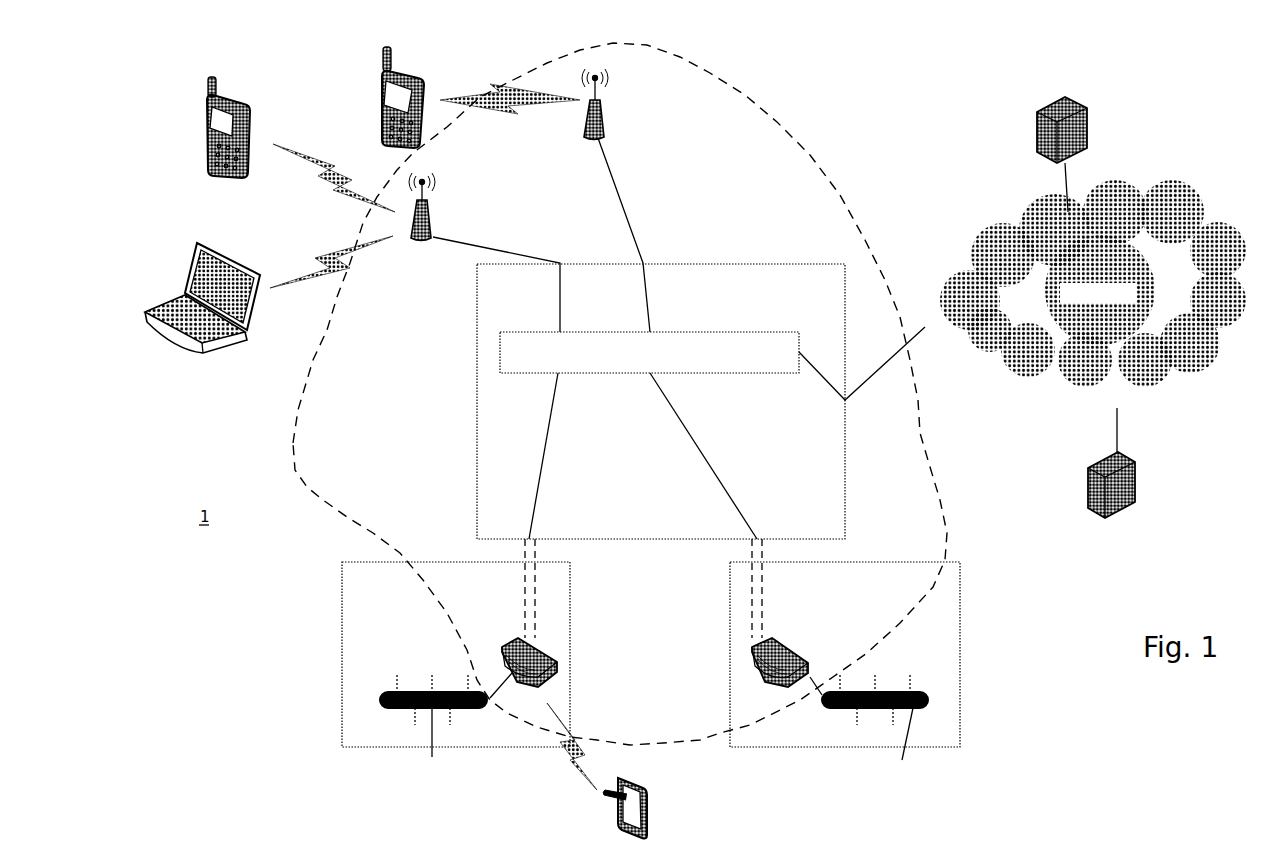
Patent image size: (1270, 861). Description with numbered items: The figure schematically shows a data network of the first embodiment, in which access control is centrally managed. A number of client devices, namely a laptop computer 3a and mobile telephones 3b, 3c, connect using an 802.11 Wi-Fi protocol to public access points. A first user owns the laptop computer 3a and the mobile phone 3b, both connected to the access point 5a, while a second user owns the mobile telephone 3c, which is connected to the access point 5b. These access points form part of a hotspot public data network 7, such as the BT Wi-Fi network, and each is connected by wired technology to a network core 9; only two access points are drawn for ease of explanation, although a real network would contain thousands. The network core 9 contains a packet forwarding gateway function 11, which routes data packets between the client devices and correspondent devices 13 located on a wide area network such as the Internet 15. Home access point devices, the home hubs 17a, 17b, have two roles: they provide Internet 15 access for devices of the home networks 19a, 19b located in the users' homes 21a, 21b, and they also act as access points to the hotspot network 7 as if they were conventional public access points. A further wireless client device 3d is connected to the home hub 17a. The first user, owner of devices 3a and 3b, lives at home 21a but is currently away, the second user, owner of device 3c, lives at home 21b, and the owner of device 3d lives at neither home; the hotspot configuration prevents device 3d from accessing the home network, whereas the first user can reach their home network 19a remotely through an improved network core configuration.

The laptop computer 3a is at (192, 250).
The mobile phone 3b is at (233, 96).
The mobile telephone 3c is at (411, 69).
The wireless client device 3d is at (648, 800).
The access point 5a is at (430, 215).
The access point 5b is at (602, 112).
The hotspot public data network 7 is at (777, 122).
The network core 9 is at (731, 262).
The packet forwarding gateway function 11 is at (775, 332).
The correspondent device 13 is at (1044, 108).
The Internet 15 is at (954, 269).
The home hub 17a is at (557, 680).
The home hub 17b is at (753, 667).
The home network 19a is at (433, 730).
The home network 19b is at (875, 730).
The home 21a is at (570, 607).
The home 21b is at (960, 630).